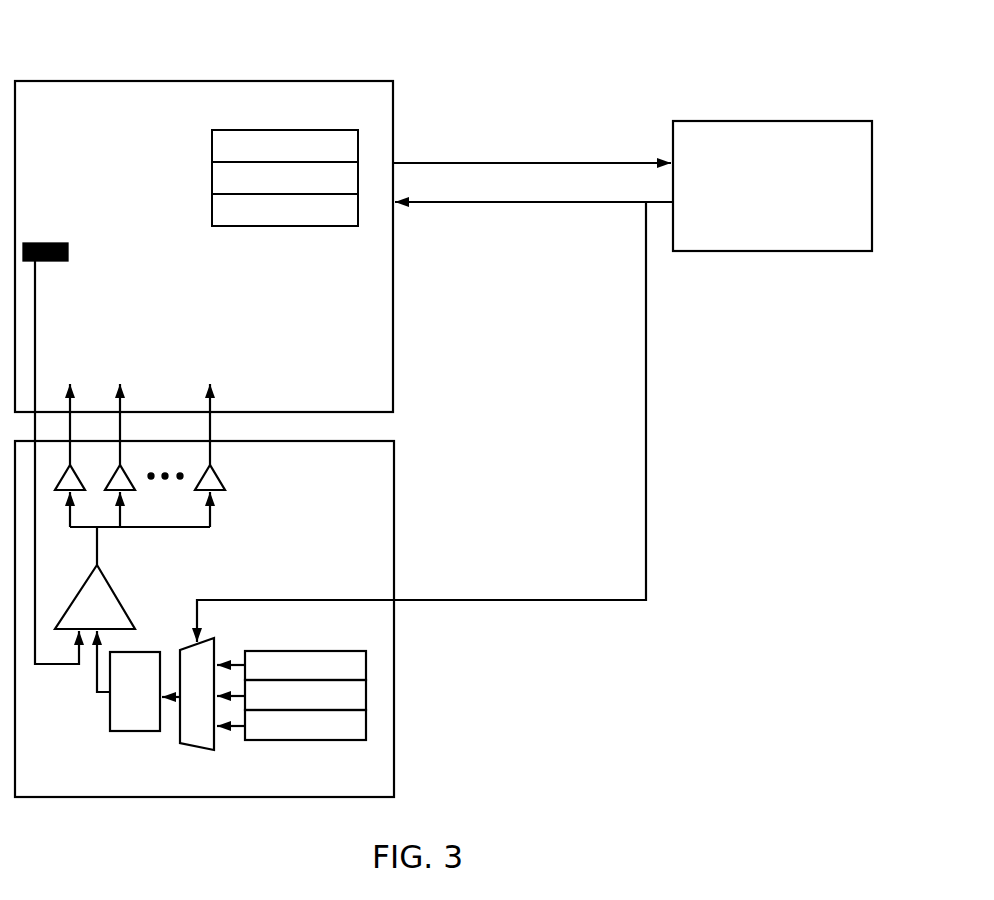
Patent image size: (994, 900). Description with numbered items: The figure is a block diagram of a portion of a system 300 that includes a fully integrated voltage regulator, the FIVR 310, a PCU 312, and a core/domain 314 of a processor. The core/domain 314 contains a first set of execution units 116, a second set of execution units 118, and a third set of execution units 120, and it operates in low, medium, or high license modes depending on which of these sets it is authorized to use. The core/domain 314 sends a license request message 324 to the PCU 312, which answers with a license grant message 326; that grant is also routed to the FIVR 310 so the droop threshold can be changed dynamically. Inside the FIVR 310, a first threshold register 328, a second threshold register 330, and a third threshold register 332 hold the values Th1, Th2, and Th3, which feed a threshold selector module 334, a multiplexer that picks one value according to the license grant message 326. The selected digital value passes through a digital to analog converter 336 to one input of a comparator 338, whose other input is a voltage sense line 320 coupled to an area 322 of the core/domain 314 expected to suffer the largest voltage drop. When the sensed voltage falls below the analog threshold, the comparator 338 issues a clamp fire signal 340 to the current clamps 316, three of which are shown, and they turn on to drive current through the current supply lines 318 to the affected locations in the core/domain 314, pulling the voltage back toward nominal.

The system 300 is at (140, 43).
The core/domain 314 is at (310, 81).
The first set of execution units 116 is at (212, 144).
The second set of execution units 118 is at (212, 176).
The third set of execution units 120 is at (212, 208).
The area 322 is at (68, 254).
The voltage sense line 320 is at (36, 348).
The current supply lines 318 is at (212, 408).
The PCU 312 is at (773, 121).
The license request message 324 is at (487, 164).
The license grant message 326 is at (415, 203).
The FIVR 310 is at (394, 448).
The current clamps 316 is at (232, 466).
The clamp fire signal 340 is at (210, 517).
The comparator 338 is at (108, 583).
The digital to analog converter 336 is at (135, 731).
The threshold selector module 334 is at (203, 749).
The first threshold register 328 is at (366, 660).
The second threshold register 330 is at (366, 697).
The third threshold register 332 is at (366, 725).